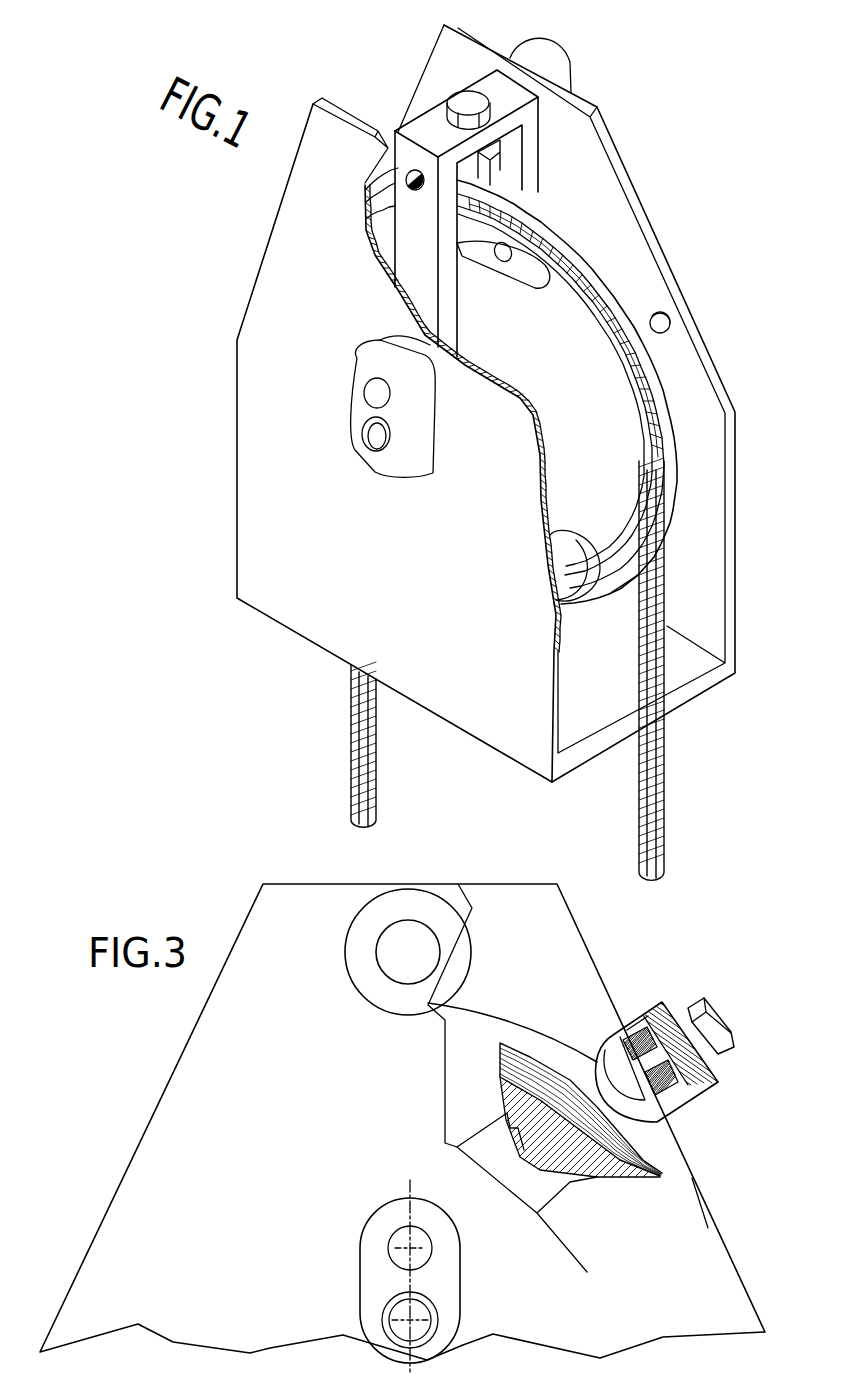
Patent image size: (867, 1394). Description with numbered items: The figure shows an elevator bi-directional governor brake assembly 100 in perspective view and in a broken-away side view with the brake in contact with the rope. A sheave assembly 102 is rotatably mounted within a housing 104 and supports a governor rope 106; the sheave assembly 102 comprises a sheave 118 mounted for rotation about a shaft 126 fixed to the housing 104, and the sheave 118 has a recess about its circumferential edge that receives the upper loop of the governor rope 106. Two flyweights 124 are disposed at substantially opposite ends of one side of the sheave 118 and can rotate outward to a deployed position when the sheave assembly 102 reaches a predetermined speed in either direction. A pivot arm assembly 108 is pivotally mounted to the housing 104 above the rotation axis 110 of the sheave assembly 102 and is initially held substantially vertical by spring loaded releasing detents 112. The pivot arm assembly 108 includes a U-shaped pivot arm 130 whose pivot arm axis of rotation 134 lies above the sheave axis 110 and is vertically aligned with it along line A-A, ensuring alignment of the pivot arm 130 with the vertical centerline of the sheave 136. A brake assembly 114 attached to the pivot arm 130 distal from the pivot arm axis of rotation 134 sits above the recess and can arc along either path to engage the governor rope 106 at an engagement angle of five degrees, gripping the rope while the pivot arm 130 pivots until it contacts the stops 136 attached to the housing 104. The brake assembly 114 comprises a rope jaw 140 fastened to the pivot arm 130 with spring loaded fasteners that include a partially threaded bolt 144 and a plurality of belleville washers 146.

In FIG. 1, the bi-directional governor brake assembly 100 is at (230, 268).
In FIG. 3, the bi-directional governor brake assembly 100 is at (227, 907).
In FIG. 1, the sheave assembly 102 is at (685, 468).
In FIG. 3, the sheave assembly 102 is at (693, 1177).
In FIG. 1, the housing 104 is at (394, 614).
In FIG. 3, the housing 104 is at (266, 1197).
In FIG. 1, the governor rope 106 is at (657, 746).
In FIG. 3, the governor rope 106 is at (527, 1045).
In FIG. 1, the pivot arm assembly 108 is at (406, 130).
In FIG. 3, the pivot arm assembly 108 is at (667, 1000).
In FIG. 1, the rotation axis of the sheave assembly 110 is at (380, 440).
In FIG. 3, the rotation axis of the sheave assembly 110 is at (413, 1320).
In FIG. 3, the spring loaded releasing detents 112 is at (428, 967).
In FIG. 1, the brake assembly 114 is at (508, 162).
In FIG. 3, the brake assembly 114 is at (627, 1018).
In FIG. 1, the sheave 118 is at (575, 399).
In FIG. 3, the sheave 118 is at (489, 1055).
In FIG. 1, the flyweights 124 is at (477, 243).
In FIG. 1, the shaft 126 is at (382, 470).
In FIG. 3, the shaft 126 is at (422, 1328).
In FIG. 3, the pivot arm 130 is at (519, 1161).
In FIG. 1, the pivot arm axis of rotation 134 is at (377, 395).
In FIG. 3, the pivot arm axis of rotation 134 is at (410, 1248).
In FIG. 1, the stops 136 is at (658, 312).
In FIG. 3, the rope jaw 140 is at (610, 1060).
In FIG. 3, the partially threaded bolt 144 is at (697, 1003).
In FIG. 3, the belleville washers 146 is at (665, 1060).